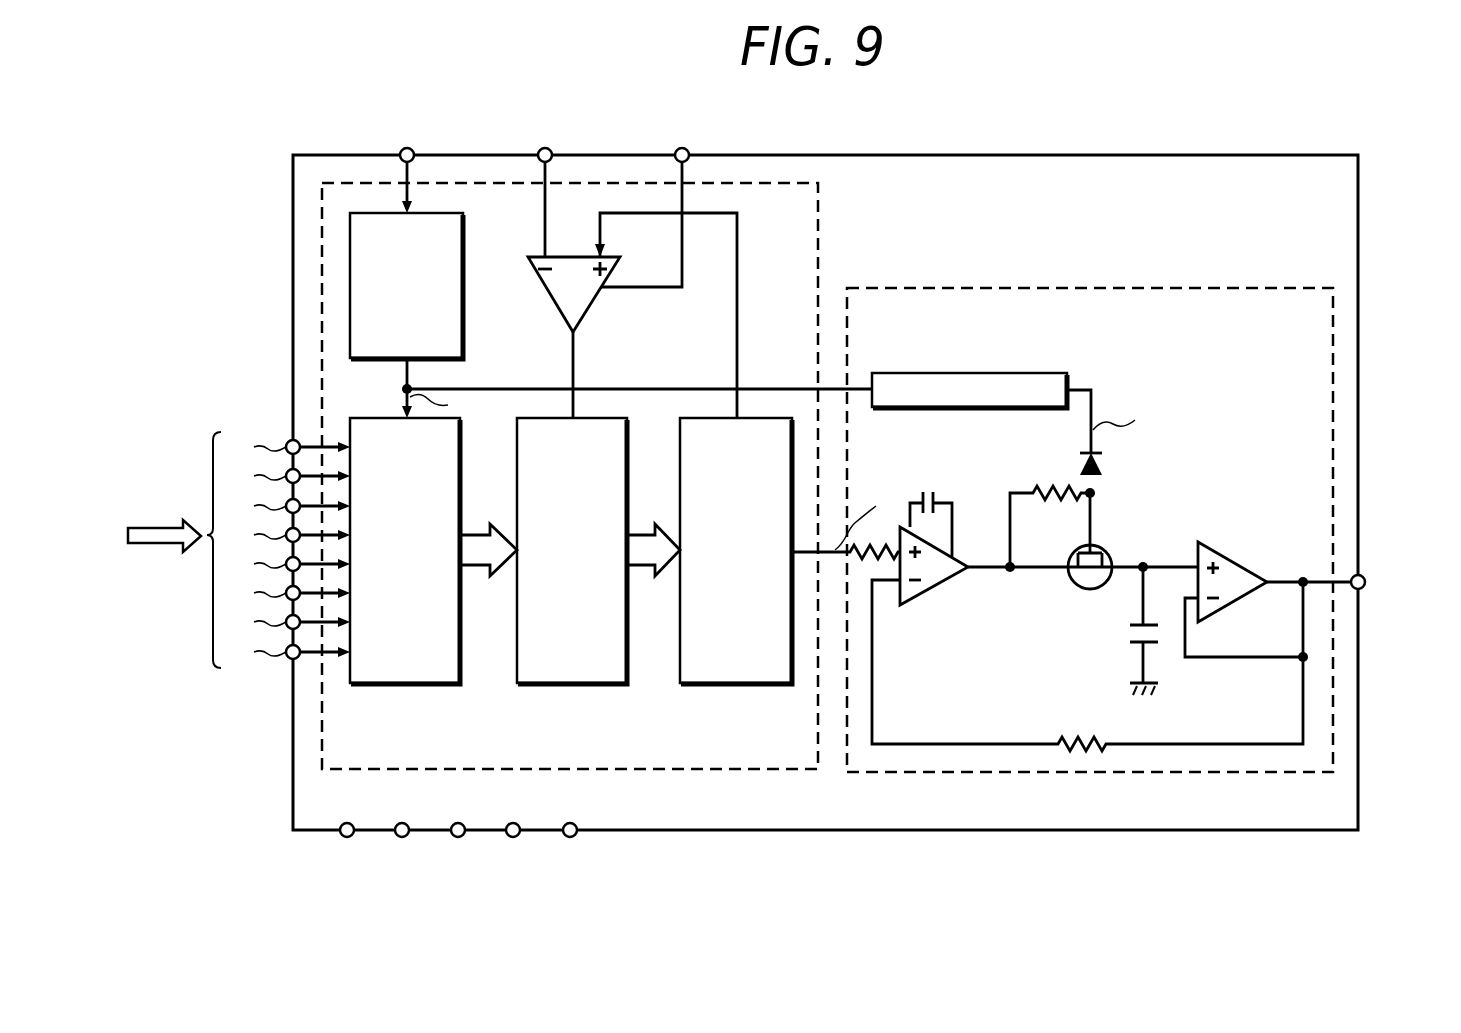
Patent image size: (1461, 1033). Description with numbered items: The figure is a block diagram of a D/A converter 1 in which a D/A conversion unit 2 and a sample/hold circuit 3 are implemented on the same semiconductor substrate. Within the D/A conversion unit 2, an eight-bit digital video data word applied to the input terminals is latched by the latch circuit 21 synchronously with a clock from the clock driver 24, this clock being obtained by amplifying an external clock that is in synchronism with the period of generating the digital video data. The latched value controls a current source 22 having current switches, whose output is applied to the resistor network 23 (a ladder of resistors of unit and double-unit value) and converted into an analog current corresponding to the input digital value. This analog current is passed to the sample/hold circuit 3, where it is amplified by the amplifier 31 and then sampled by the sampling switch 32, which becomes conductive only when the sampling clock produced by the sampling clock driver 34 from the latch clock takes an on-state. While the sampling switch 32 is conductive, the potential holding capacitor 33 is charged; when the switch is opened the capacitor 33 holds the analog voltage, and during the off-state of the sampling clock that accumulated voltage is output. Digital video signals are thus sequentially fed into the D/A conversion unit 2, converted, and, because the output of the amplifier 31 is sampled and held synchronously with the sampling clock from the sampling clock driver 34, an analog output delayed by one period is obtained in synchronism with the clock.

The D/A converter 1 is at (1348, 256).
The D/A conversion unit 2 is at (786, 771).
The sample/hold circuit 3 is at (1308, 288).
The latch circuit 21 is at (430, 685).
The current source 22 is at (597, 685).
The R-2R resistor network 23 is at (765, 685).
The clock driver 24 is at (465, 350).
The amplifier 31 is at (924, 607).
The sampling switch 32 is at (1073, 577).
The potential holding capacitor 33 is at (1129, 643).
The sampling clock driver 34 is at (902, 373).